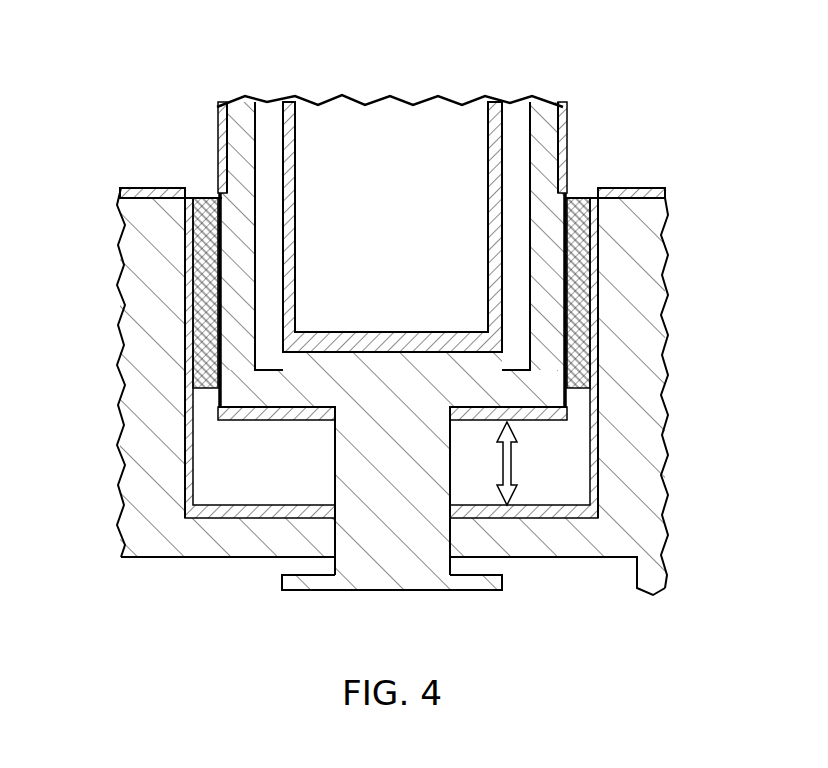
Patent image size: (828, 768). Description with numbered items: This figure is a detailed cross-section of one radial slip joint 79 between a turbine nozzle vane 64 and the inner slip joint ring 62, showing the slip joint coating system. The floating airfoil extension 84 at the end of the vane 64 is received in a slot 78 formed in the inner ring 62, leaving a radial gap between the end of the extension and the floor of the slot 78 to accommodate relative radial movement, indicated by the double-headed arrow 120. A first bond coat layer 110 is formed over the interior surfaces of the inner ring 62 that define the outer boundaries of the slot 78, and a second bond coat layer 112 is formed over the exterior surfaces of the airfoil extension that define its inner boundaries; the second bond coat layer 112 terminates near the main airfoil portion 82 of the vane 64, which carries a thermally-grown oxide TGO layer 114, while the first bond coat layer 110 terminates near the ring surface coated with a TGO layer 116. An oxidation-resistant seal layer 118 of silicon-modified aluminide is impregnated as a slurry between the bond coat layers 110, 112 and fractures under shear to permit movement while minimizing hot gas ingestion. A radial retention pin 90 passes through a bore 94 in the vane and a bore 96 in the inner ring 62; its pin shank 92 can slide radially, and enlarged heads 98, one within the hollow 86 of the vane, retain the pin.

The inner ring 62 is at (409, 368).
The vane 64 is at (395, 214).
The slot 78 is at (286, 479).
The slip joint 79 is at (580, 194).
The main airfoil portion 82 is at (238, 278).
The airfoil extension 84 is at (264, 108).
The hollow 86 is at (294, 186).
The radial retention pin 90 is at (392, 389).
The pin shank 92 is at (408, 479).
The bore 94 is at (450, 393).
The bore 96 is at (451, 544).
The enlarged head 98 is at (326, 358).
The first bond coat layer 110 is at (188, 263).
The second bond coat layer 112 is at (258, 239).
The TGO layer 114 is at (218, 144).
The TGO layer 116 is at (148, 190).
The oxidation-resistant seal layer 118 is at (203, 310).
The double-headed arrow 120 is at (512, 462).